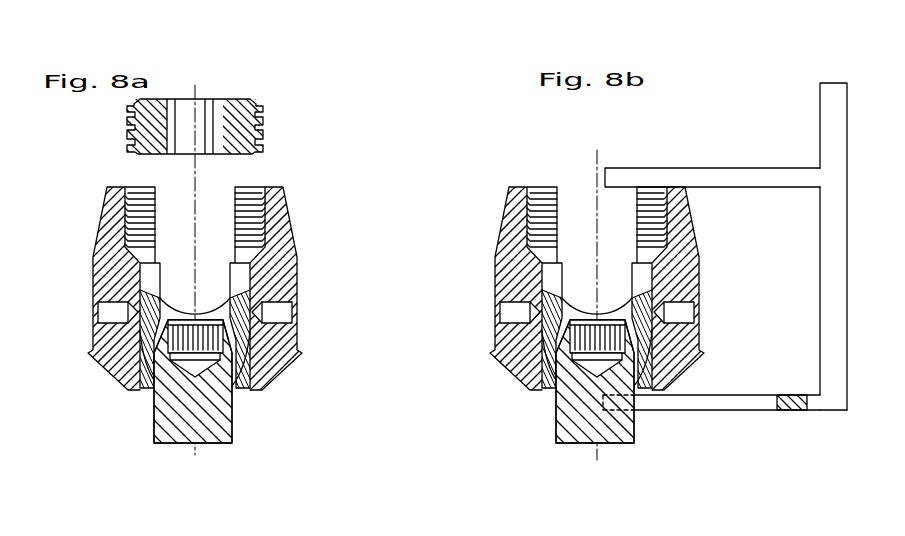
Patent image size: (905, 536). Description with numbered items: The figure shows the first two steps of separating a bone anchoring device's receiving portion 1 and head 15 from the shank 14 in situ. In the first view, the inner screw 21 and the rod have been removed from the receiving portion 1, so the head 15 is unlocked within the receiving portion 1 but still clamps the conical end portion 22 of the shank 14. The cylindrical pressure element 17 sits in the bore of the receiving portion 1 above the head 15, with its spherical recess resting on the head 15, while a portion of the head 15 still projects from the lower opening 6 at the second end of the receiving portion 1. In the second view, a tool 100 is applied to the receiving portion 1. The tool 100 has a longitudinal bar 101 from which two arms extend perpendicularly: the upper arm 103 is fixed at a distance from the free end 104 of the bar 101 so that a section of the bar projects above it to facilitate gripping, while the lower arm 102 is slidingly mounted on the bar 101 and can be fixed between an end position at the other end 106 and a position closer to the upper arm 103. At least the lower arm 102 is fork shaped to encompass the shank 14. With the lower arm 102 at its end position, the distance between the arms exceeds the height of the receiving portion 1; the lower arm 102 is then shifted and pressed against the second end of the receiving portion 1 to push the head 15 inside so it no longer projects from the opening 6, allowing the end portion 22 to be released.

In FIG. 8a, the receiving portion 1 is at (300, 229).
In FIG. 8b, the receiving portion 1 is at (704, 262).
In FIG. 8b, the opening 6 is at (548, 390).
In FIG. 8a, the shank 14 is at (228, 434).
In FIG. 8b, the shank 14 is at (632, 438).
In FIG. 8a, the head 15 is at (135, 383).
In FIG. 8b, the head 15 is at (543, 363).
In FIG. 8a, the pressure element 17 is at (147, 295).
In FIG. 8b, the pressure element 17 is at (545, 288).
In FIG. 8a, the inner screw 21 is at (250, 101).
In FIG. 8a, the end portion 22 is at (250, 344).
In FIG. 8b, the tool 100 is at (732, 273).
In FIG. 8b, the longitudinal bar 101 is at (827, 309).
In FIG. 8b, the lower arm 102 is at (728, 413).
In FIG. 8b, the upper arm 103 is at (705, 178).
In FIG. 8b, the free end 104 is at (833, 83).
In FIG. 8b, the other end 106 is at (833, 412).